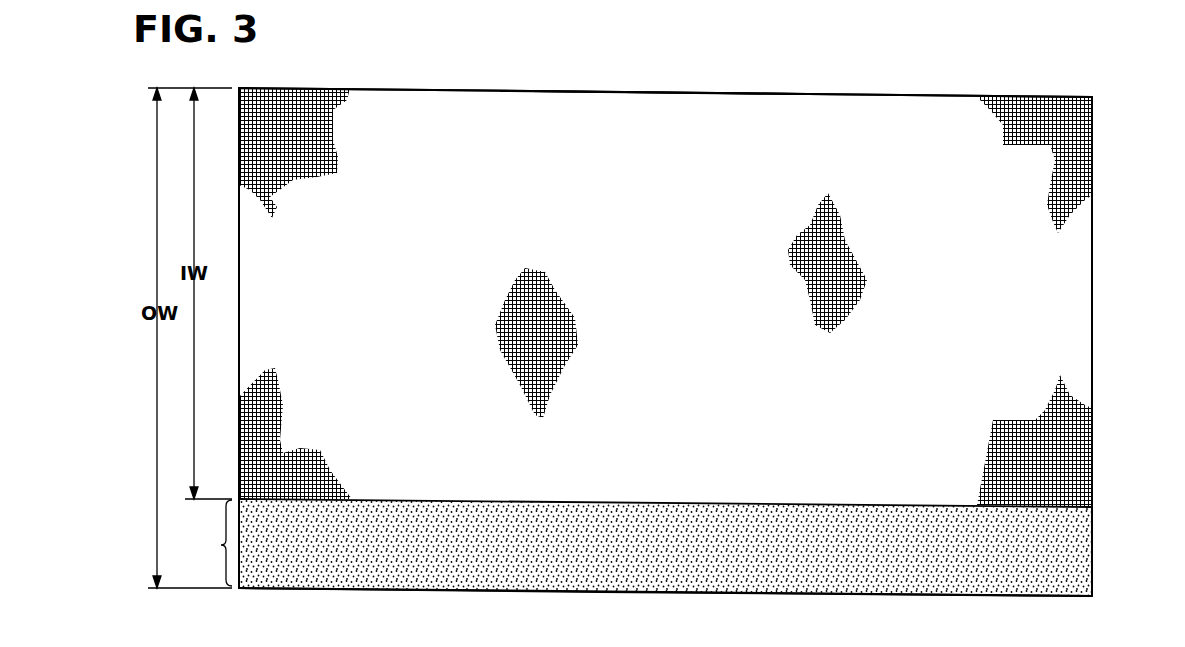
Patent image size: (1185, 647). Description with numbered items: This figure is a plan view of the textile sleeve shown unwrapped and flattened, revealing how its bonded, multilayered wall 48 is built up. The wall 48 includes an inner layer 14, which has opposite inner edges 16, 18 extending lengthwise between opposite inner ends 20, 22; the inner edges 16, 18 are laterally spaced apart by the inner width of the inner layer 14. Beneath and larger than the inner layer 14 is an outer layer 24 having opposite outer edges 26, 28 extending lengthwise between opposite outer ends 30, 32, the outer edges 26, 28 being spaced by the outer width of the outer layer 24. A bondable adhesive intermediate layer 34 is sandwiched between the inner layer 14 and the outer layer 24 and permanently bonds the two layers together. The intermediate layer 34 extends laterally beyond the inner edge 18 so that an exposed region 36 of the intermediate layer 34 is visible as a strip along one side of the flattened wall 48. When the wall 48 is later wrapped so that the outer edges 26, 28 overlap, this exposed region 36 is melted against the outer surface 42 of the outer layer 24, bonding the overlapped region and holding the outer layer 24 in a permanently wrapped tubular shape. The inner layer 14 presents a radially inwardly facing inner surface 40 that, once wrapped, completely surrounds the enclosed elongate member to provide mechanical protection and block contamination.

The inner layer 14 is at (1075, 367).
The inner edge 16 is at (997, 97).
The inner edge 18 is at (1043, 510).
The inner end 20 is at (252, 193).
The inner end 22 is at (1092, 145).
The outer layer 24 is at (318, 590).
The outer edge 26 is at (880, 95).
The outer edge 28 is at (828, 594).
The outer end 30 is at (239, 545).
The outer end 32 is at (1092, 575).
The adhesive intermediate layer 34 is at (950, 553).
The exposed region 36 is at (213, 543).
The inner surface 40 is at (1056, 325).
The outer surface 42 is at (420, 6).
The wall 48 is at (653, 91).